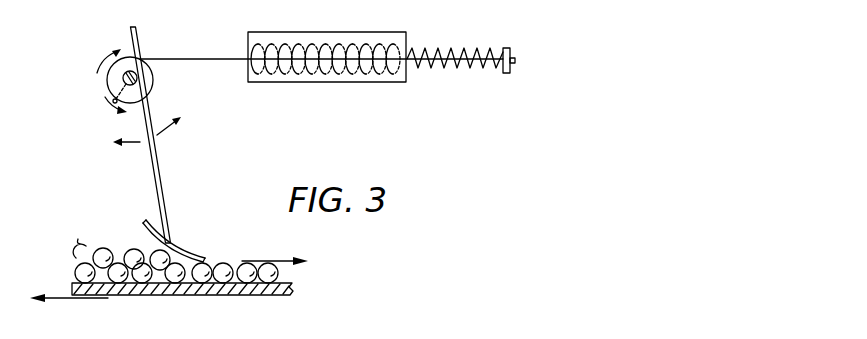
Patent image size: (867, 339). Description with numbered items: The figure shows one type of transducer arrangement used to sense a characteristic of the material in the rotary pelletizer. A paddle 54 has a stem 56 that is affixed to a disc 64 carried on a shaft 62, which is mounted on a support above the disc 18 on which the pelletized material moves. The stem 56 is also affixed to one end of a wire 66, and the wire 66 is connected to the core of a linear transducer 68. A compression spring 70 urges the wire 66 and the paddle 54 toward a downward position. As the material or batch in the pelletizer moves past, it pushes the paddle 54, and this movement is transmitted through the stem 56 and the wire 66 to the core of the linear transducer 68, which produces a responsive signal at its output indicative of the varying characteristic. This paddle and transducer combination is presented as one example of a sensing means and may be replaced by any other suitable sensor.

The disc 18 is at (103, 268).
The paddle 54 is at (143, 226).
The stem 56 is at (158, 172).
The shaft 62 is at (108, 77).
The disc 64 is at (113, 98).
The wire 66 is at (213, 58).
The linear transducer 68 is at (322, 32).
The compression spring 70 is at (470, 48).